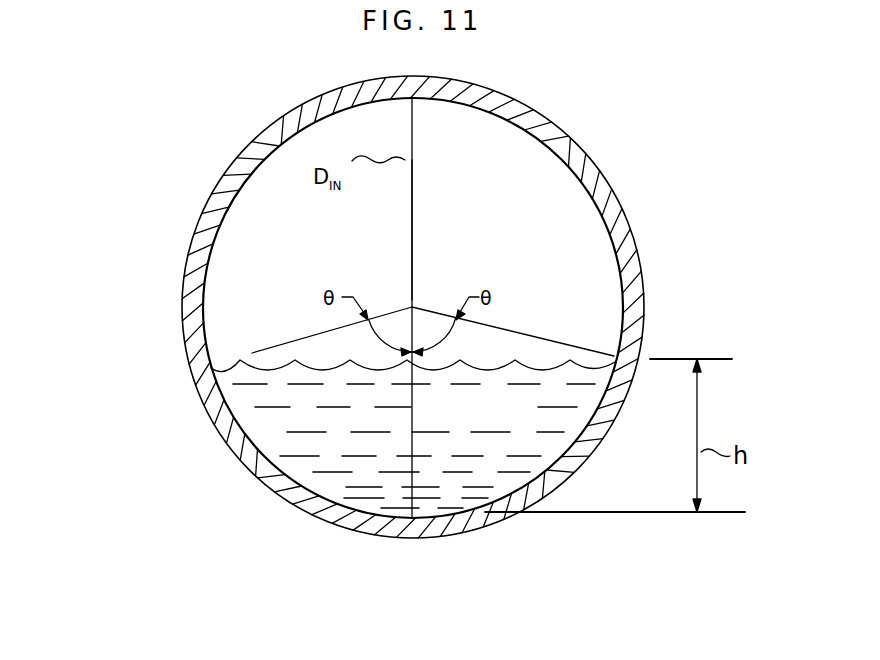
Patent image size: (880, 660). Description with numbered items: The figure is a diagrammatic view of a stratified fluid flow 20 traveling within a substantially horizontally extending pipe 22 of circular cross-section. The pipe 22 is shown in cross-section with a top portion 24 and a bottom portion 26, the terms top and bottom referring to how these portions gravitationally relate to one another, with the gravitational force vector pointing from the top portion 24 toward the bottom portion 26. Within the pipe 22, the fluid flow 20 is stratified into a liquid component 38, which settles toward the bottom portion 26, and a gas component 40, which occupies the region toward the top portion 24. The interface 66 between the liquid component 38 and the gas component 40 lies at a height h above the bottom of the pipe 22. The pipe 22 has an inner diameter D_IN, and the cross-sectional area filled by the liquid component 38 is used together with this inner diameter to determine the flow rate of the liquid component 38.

The stratified fluid flow 20 is at (439, 334).
The pipe 22 is at (605, 181).
The top portion 24 is at (320, 113).
The bottom portion 26 is at (389, 516).
The liquid component 38 is at (280, 450).
The gas component 40 is at (240, 261).
The interface 66 is at (255, 370).